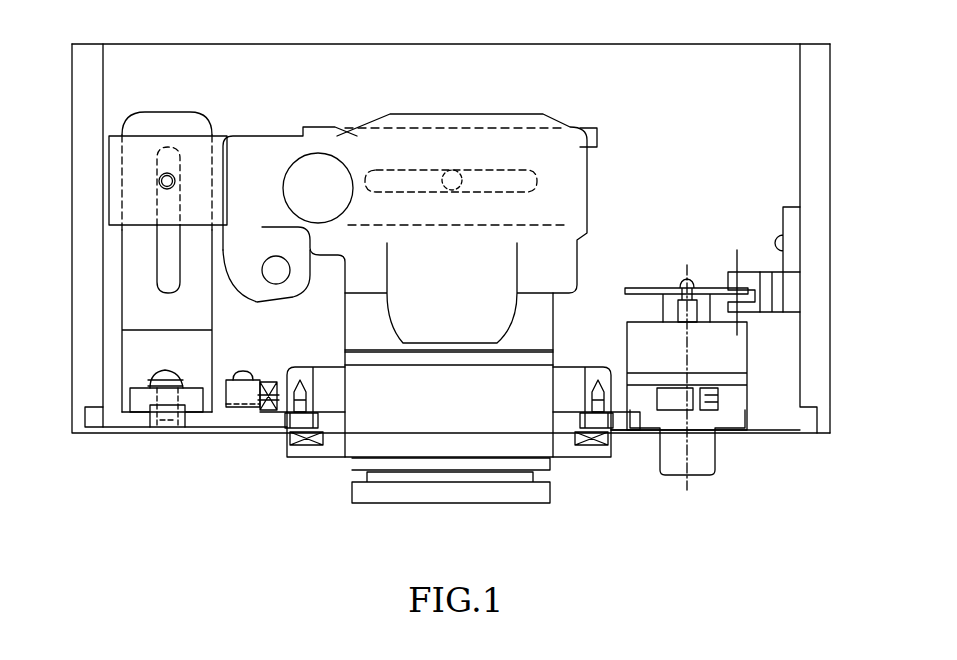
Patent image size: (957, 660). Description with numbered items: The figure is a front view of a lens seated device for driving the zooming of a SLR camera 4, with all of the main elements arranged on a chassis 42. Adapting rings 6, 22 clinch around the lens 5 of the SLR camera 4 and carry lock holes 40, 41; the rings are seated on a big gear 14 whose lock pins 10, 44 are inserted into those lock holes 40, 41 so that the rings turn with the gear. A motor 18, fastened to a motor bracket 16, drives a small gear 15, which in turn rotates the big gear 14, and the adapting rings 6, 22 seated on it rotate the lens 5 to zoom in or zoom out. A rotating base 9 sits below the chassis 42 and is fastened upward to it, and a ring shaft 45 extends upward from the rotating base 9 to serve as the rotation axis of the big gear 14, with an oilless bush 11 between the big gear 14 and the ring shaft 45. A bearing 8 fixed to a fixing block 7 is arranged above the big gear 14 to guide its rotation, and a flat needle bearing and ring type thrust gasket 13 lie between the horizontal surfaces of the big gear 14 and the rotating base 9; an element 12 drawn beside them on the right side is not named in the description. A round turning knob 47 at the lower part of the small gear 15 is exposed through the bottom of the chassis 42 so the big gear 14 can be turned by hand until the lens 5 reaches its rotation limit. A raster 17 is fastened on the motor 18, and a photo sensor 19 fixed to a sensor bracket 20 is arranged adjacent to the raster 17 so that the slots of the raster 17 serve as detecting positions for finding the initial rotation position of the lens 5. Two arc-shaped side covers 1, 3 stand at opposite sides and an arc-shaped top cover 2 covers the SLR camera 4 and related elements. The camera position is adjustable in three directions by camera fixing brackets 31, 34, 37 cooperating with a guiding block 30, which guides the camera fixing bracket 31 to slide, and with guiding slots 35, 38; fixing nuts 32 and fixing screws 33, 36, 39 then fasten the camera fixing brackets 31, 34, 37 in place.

The arc-shaped side cover 1 is at (85, 60).
The arc-shaped top cover 2 is at (375, 44).
The arc-shaped side cover 3 is at (820, 70).
The SLR camera 4 is at (258, 240).
The lens 5 is at (510, 425).
The adapting ring 6 is at (312, 430).
The fixing block 7 is at (235, 398).
The bearing 8 is at (250, 410).
The rotating base 9 is at (318, 440).
The lock pin 10 is at (300, 415).
The oilless bush 11 is at (328, 448).
The right pin 12 is at (598, 430).
The flat needle bearing 13 is at (604, 440).
The big gear 14 is at (608, 445).
The small gear 15 is at (648, 420).
The motor bracket 16 is at (730, 400).
The raster 17 is at (705, 300).
The motor 18 is at (750, 318).
The photo sensor 19 is at (790, 330).
The sensor bracket 20 is at (790, 285).
The adapting ring 22 is at (545, 440).
The guiding block 30 is at (160, 430).
The camera fixing bracket 31 is at (118, 428).
The fixing nut 32 is at (140, 398).
The fixing screw 33 is at (155, 378).
The camera fixing bracket 34 is at (125, 120).
The guiding slot 35 is at (165, 245).
The fixing screw 36 is at (160, 190).
The camera fixing bracket 37 is at (590, 140).
The guiding slot 38 is at (518, 180).
The fixing screw 39 is at (455, 175).
The lock hole 40 is at (268, 412).
The lock hole 41 is at (575, 415).
The chassis 42 is at (95, 425).
The lock pin 44 is at (614, 455).
The ring shaft 45 is at (323, 445).
The round turning knob 47 is at (695, 460).